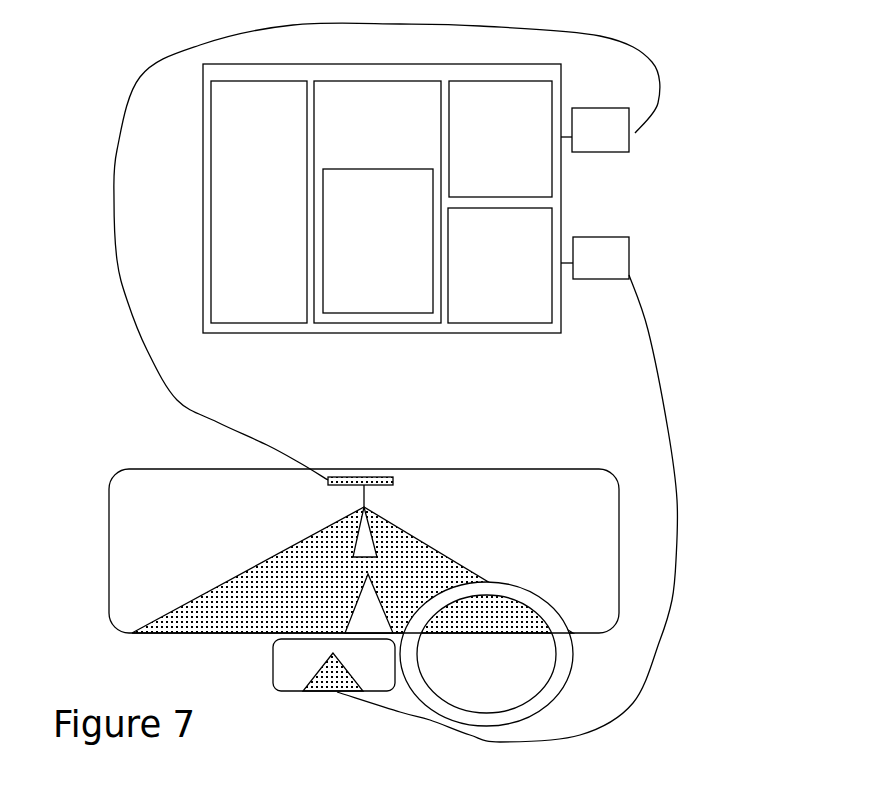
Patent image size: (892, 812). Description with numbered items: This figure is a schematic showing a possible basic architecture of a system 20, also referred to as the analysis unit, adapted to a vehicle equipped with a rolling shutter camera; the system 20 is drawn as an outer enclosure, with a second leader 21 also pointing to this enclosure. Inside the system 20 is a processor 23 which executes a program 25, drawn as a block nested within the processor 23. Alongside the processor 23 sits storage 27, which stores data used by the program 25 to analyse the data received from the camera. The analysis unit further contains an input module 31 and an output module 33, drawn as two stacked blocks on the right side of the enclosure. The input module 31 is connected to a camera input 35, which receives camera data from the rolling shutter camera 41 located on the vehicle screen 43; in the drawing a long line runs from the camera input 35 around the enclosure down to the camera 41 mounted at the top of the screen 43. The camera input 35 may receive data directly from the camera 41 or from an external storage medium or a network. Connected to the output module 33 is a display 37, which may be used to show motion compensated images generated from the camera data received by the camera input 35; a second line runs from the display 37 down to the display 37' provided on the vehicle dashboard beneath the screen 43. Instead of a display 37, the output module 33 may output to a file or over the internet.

The system 20 is at (204, 201).
The housing 21 is at (200, 293).
The processor 23 is at (345, 127).
The program 25 is at (380, 270).
The storage 27 is at (268, 272).
The input module 31 is at (532, 127).
The output module 33 is at (488, 282).
The camera input 35 is at (607, 135).
The display 37 is at (596, 280).
The display on the vehicle dashboard 37' is at (322, 689).
The rolling shutter camera 41 is at (384, 474).
The vehicle screen 43 is at (448, 475).